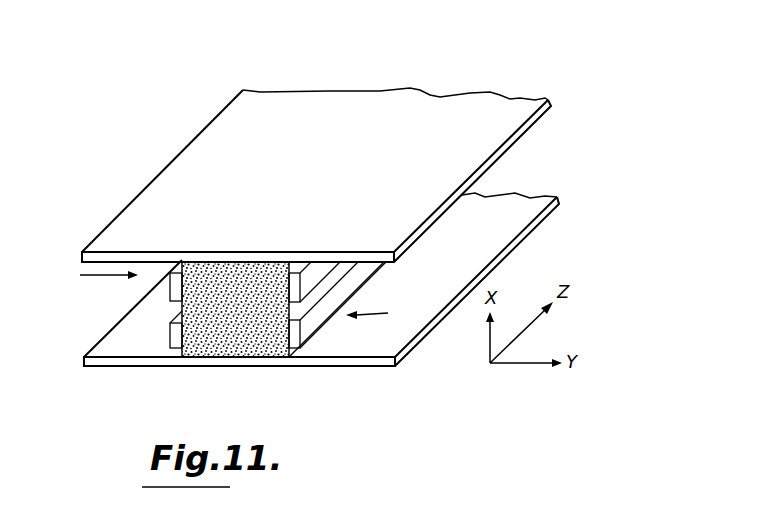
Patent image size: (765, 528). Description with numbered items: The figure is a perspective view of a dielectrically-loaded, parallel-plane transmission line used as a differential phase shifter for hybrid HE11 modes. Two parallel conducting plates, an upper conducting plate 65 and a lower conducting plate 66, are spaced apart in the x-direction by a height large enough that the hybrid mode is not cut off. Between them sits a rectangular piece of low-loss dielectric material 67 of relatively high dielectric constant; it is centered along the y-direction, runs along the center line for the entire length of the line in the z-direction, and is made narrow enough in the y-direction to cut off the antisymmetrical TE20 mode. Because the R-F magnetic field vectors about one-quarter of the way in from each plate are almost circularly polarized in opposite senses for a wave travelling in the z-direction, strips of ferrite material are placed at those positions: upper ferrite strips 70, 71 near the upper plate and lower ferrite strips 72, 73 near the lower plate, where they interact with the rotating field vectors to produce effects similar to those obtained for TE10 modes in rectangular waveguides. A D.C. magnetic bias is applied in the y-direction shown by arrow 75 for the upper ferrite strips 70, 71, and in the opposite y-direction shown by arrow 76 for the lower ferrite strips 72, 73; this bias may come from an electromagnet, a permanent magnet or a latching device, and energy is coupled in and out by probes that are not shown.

The upper conducting plate 65 is at (238, 112).
The lower conducting plate 66 is at (338, 361).
The dielectric material 67 is at (245, 347).
The upper ferrite strip 70 is at (306, 279).
The upper ferrite strip 71 is at (170, 292).
The lower ferrite strip 72 is at (316, 328).
The lower ferrite strip 73 is at (172, 337).
The arrow 75 is at (92, 283).
The arrow 76 is at (388, 313).